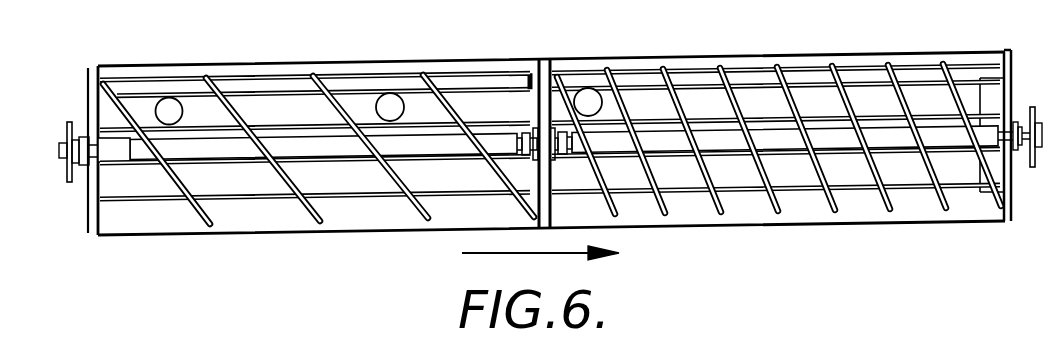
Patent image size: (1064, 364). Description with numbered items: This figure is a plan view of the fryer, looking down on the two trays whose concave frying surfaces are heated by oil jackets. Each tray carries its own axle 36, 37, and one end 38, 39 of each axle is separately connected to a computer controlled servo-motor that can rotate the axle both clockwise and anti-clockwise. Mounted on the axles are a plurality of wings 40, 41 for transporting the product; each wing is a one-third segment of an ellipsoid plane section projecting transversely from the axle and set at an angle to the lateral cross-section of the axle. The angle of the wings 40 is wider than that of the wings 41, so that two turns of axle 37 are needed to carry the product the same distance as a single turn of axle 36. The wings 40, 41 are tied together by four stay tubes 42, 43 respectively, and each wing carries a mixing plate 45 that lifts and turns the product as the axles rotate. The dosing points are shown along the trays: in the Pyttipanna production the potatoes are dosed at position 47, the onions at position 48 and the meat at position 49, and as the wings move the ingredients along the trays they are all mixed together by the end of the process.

The axle 36 is at (337, 147).
The axle 37 is at (835, 137).
The axle end 38 is at (68, 182).
The axle end 39 is at (1035, 167).
The wings 40 is at (300, 214).
The wings 41 is at (957, 167).
The stay tubes 42 is at (230, 170).
The stay tubes 43 is at (966, 203).
The mixing plate 45 is at (260, 88).
The dosing point 47 is at (168, 97).
The dosing point 48 is at (390, 93).
The dosing point 49 is at (587, 88).